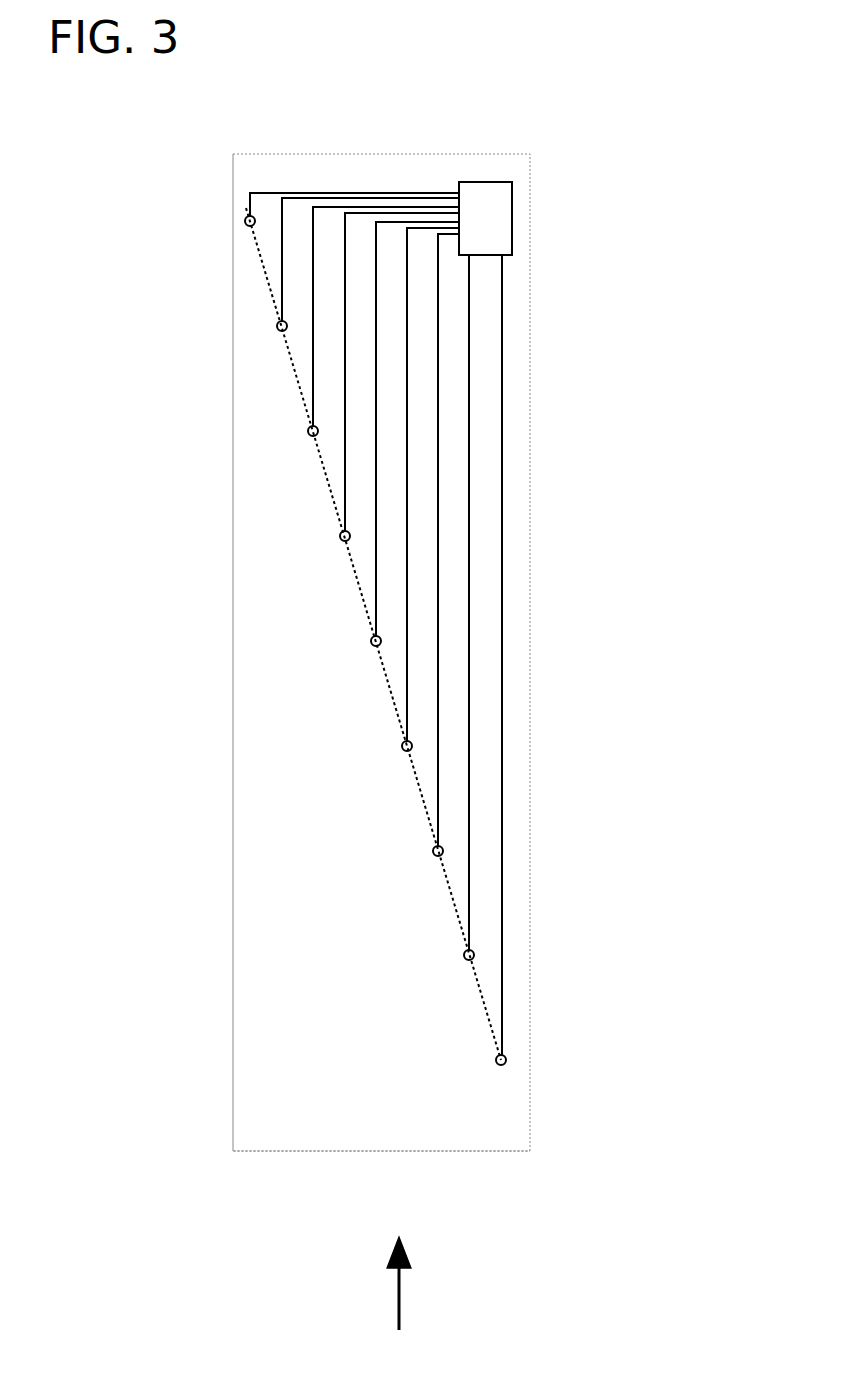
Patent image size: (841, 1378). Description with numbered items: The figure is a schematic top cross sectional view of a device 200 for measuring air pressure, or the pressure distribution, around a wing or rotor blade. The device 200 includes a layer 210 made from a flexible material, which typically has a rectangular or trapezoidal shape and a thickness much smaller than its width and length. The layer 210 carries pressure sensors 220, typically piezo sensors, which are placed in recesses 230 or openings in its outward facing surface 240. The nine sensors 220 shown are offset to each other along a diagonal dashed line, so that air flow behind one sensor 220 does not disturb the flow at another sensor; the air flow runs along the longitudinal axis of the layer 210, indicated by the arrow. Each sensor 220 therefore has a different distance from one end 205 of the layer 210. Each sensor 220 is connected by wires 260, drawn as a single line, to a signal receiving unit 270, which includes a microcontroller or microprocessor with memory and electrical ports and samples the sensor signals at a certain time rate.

The device 200 is at (638, 86).
The end of the layer 205 is at (393, 1155).
The layer 210 is at (233, 822).
The pressure sensors 220 is at (506, 1056).
The recesses 230 is at (503, 1066).
The outward facing surface 240 is at (257, 1003).
The wires 260 is at (503, 910).
The signal receiving unit 270 is at (503, 223).